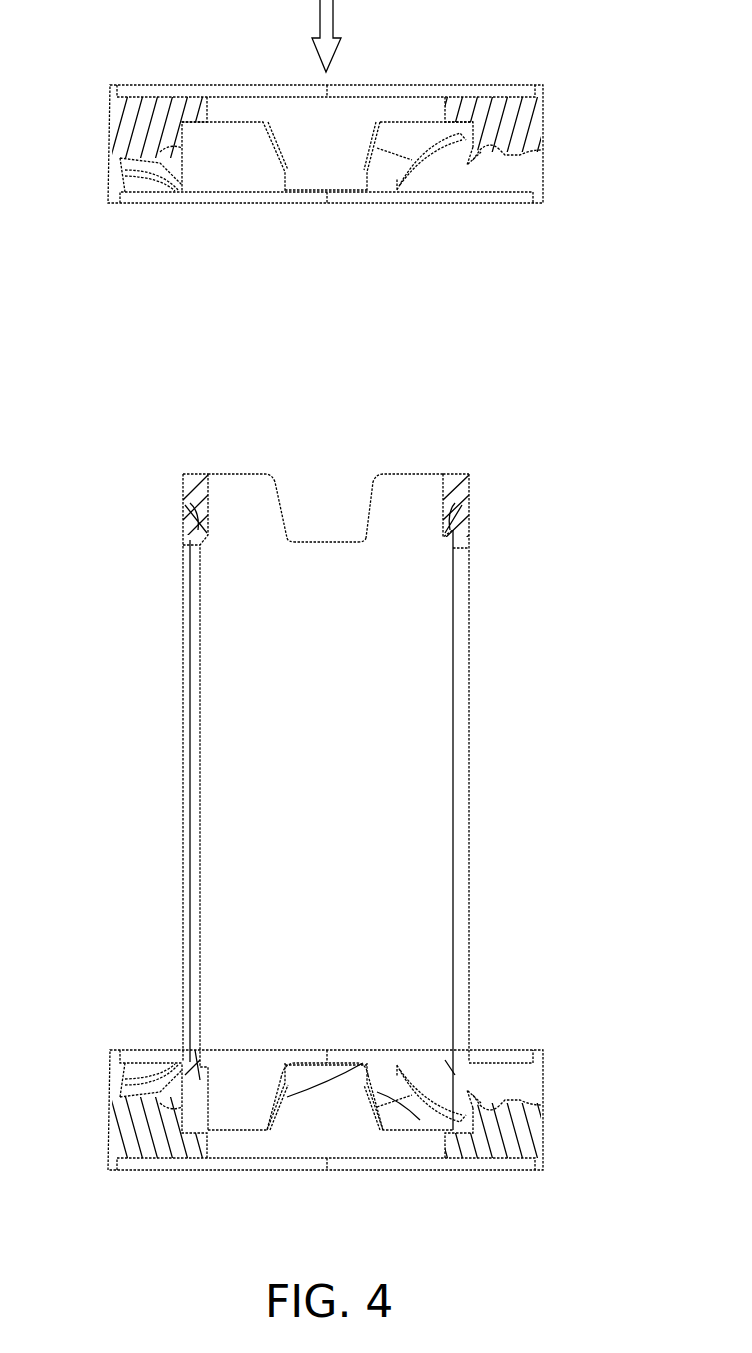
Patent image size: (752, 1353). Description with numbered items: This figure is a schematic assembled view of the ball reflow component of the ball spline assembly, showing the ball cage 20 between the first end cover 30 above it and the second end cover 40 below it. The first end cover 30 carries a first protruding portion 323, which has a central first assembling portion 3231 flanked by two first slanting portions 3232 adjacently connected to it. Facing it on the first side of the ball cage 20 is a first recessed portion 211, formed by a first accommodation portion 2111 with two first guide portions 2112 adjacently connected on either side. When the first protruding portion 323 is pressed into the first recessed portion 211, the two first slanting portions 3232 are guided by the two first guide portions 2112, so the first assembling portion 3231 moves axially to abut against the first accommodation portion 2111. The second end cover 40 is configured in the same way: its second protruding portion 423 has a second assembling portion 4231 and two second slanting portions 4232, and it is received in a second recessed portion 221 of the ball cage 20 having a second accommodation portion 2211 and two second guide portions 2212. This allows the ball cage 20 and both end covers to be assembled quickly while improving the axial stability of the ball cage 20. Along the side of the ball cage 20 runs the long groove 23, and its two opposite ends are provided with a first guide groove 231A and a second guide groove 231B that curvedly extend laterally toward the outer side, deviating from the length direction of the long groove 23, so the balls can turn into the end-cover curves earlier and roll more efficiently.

The ball cage 20 is at (183, 757).
The long groove 23 is at (189, 641).
The first end cover 30 is at (110, 139).
The second end cover 40 is at (110, 1122).
The first recessed portion 211 is at (427, 400).
The first accommodation portion 2111 is at (327, 540).
The first guide portion 2112 is at (368, 498).
The second recessed portion 221 is at (570, 945).
The second accommodation portion 2211 is at (320, 1068).
The second guide portion 2212 is at (418, 1082).
The first guide groove 231A is at (193, 528).
The second guide groove 231B is at (192, 1040).
The first protruding portion 323 is at (453, 281).
The first assembling portion 3231 is at (348, 165).
The first slanting portion 3232 is at (417, 258).
The second protruding portion 423 is at (460, 1225).
The second assembling portion 4231 is at (353, 1088).
The second slanting portion 4232 is at (375, 1108).